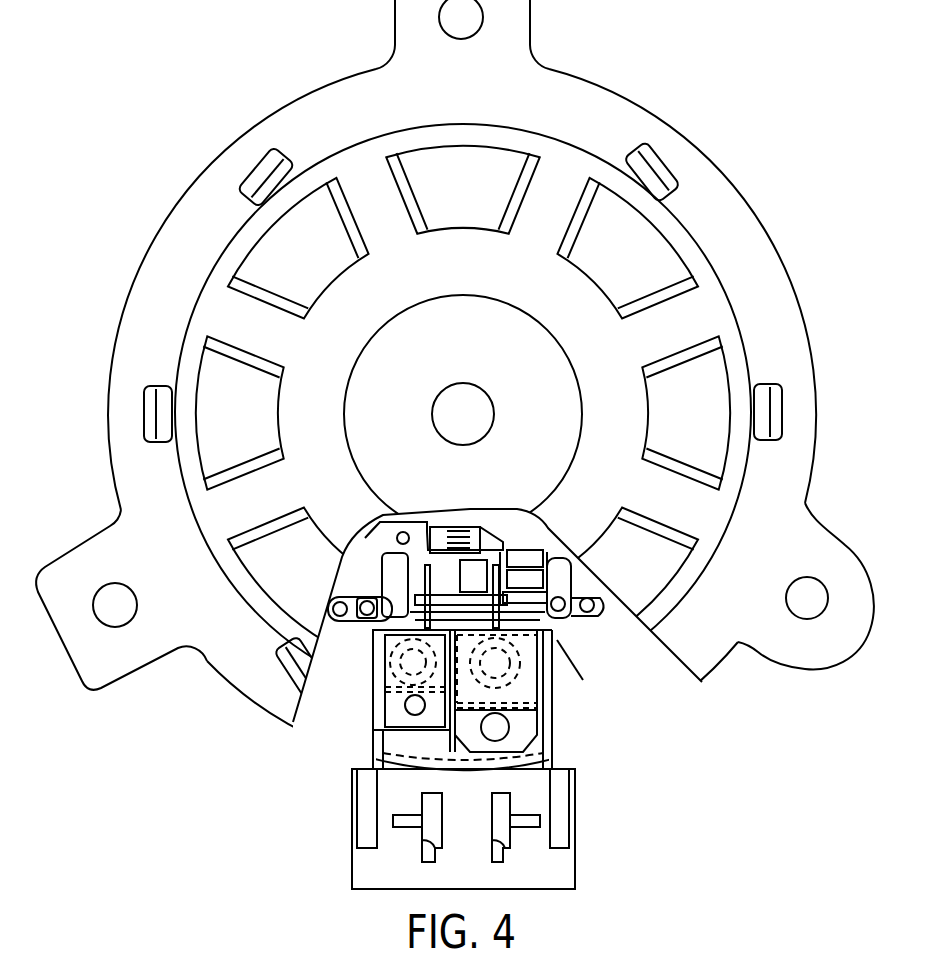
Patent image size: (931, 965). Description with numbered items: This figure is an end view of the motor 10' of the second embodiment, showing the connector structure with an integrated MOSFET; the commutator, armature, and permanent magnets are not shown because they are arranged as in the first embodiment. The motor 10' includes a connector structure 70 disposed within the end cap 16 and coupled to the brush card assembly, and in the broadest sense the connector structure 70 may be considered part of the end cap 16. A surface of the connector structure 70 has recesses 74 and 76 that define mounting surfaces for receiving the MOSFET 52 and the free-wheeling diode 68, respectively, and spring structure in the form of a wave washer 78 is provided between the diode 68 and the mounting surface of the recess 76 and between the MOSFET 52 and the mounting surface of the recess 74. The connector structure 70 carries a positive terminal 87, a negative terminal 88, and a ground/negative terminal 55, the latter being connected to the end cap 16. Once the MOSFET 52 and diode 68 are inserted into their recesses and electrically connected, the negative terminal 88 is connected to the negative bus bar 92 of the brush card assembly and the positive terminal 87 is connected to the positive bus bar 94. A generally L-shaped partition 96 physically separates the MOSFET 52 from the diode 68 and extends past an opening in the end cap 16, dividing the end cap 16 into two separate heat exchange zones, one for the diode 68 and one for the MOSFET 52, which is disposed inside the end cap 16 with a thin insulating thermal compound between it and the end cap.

The motor 10' is at (493, 407).
The end cap 16 is at (793, 481).
The negative terminal 88 is at (551, 598).
The positive terminal 87 is at (370, 598).
The positive bus bar 94 is at (334, 604).
The negative bus bar 92 is at (588, 612).
The wave washer 78 is at (382, 658).
The free-wheeling diode 68 is at (392, 698).
The recess 76 is at (373, 718).
The recess 74 is at (550, 705).
The MOSFET 52 is at (533, 722).
The ground/negative terminal 55 is at (583, 680).
The partition 96 is at (403, 730).
The connector structure 70 is at (400, 802).